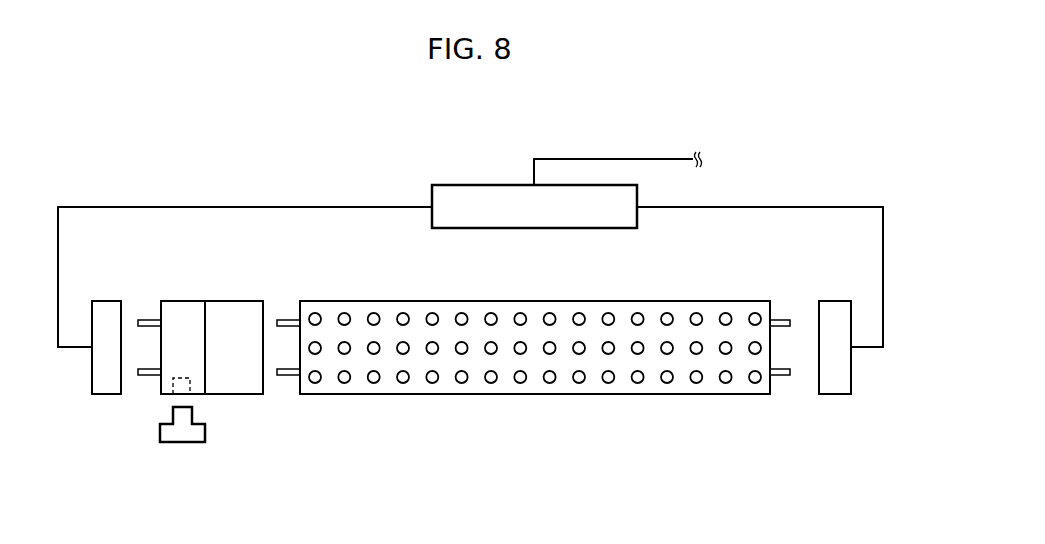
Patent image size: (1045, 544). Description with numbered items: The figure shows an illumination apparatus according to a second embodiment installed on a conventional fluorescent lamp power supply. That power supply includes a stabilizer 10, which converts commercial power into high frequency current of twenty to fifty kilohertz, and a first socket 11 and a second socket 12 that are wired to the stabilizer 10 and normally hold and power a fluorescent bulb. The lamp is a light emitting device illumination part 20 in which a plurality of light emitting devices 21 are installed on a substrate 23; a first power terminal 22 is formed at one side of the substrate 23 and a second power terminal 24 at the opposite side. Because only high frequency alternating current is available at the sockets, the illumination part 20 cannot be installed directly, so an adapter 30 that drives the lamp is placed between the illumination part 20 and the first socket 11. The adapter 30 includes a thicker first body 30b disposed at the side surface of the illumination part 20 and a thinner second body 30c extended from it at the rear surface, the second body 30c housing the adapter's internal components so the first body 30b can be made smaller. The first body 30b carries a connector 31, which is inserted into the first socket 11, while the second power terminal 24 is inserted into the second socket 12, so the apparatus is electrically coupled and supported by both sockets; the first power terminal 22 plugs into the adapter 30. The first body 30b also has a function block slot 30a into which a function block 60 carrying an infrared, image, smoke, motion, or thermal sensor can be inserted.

The stabilizer 10 is at (492, 183).
The first socket 11 is at (102, 395).
The second socket 12 is at (838, 392).
The light emitting device illumination part 20 is at (535, 395).
The light emitting devices 21 is at (548, 383).
The first power terminal 22 is at (288, 377).
The substrate 23 is at (603, 397).
The second power terminal 24 is at (783, 378).
The adapter 30 is at (207, 332).
The function block slot 30a is at (166, 387).
The first body 30b is at (185, 307).
The second body 30c is at (252, 307).
The connector 31 is at (147, 322).
The function block 60 is at (182, 450).